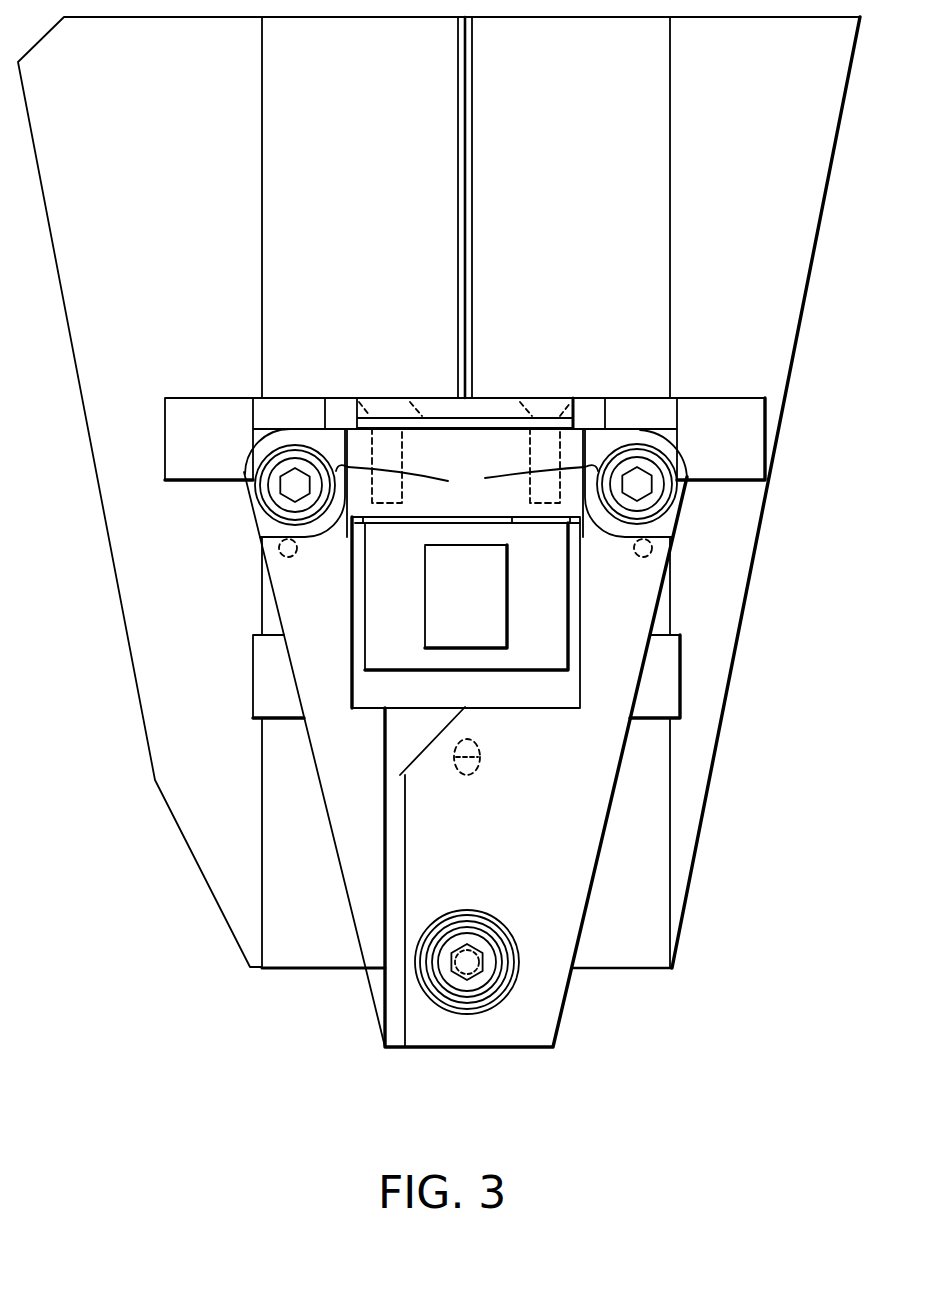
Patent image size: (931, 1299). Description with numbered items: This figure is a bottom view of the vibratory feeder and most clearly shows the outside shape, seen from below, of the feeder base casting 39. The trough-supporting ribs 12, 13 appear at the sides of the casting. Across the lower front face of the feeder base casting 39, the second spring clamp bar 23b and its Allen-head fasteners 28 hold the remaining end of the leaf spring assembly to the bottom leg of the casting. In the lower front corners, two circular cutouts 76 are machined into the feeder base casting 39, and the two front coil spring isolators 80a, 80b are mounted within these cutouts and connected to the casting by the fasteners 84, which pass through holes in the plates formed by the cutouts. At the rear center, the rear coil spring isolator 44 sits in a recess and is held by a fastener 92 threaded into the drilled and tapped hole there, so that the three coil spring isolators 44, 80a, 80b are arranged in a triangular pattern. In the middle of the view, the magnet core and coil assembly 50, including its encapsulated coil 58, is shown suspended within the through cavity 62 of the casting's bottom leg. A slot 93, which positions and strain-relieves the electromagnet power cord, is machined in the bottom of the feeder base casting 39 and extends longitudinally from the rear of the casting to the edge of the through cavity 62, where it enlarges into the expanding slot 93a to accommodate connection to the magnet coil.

The rib 12 is at (765, 426).
The rib 13 is at (681, 666).
The second spring clamp bar 23b is at (577, 413).
The Allen-head fasteners 28 is at (530, 436).
The feeder base casting 39 is at (570, 1017).
The rear coil spring isolator 44 is at (504, 926).
The magnet core and coil assembly 50 is at (378, 614).
The coil 58 is at (373, 647).
The through cavity 62 is at (541, 704).
The circular cutouts 76 is at (467, 480).
The front coil spring isolator 80a is at (270, 490).
The front coil spring isolator 80b is at (665, 487).
The fasteners 84 is at (637, 493).
The fastener 92 is at (478, 978).
The slot 93 is at (394, 882).
The expanding slot 93a is at (421, 742).